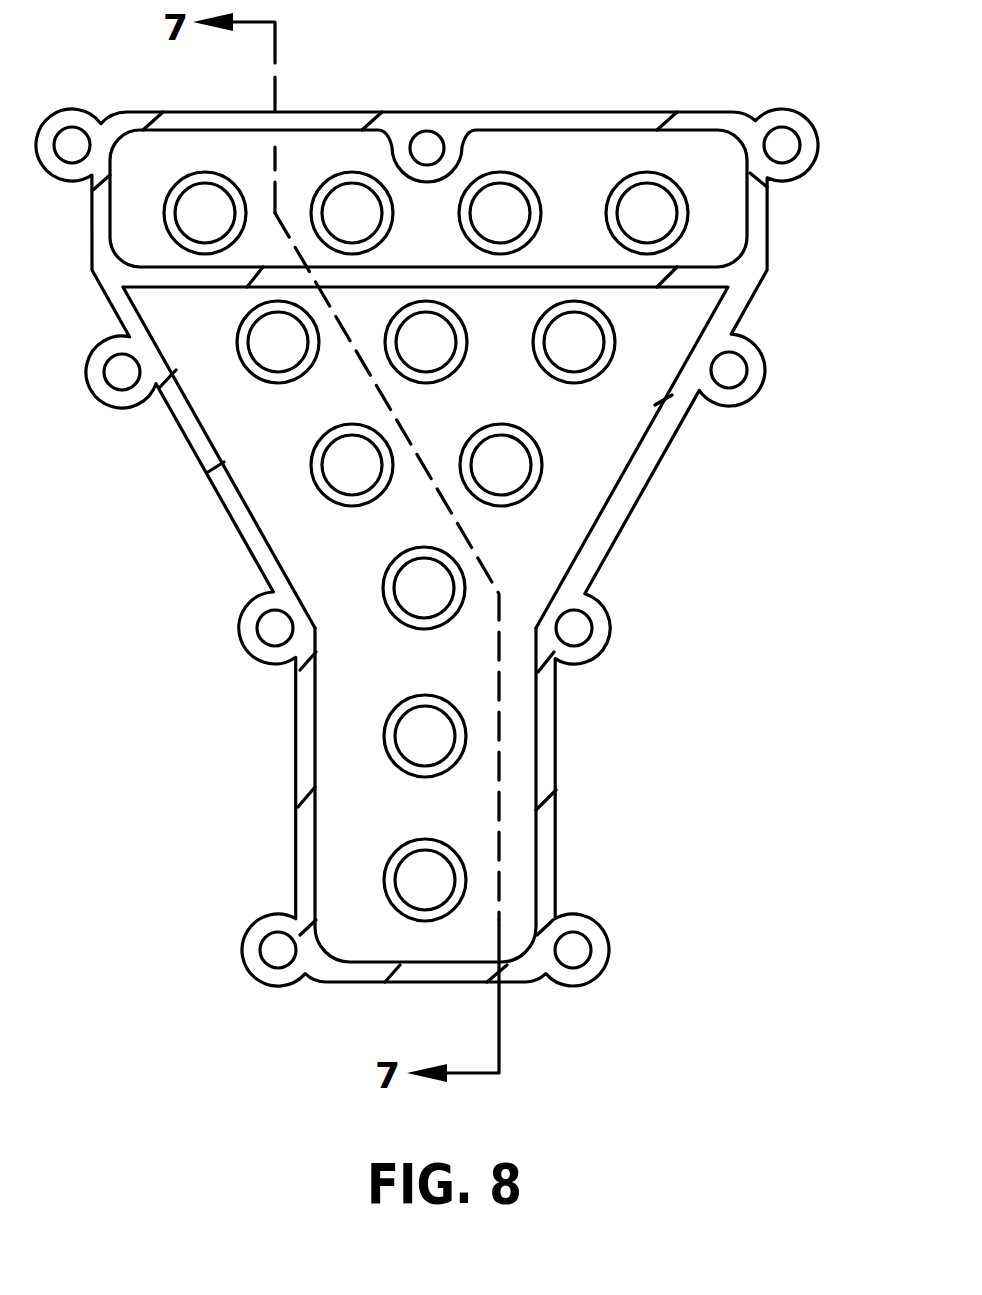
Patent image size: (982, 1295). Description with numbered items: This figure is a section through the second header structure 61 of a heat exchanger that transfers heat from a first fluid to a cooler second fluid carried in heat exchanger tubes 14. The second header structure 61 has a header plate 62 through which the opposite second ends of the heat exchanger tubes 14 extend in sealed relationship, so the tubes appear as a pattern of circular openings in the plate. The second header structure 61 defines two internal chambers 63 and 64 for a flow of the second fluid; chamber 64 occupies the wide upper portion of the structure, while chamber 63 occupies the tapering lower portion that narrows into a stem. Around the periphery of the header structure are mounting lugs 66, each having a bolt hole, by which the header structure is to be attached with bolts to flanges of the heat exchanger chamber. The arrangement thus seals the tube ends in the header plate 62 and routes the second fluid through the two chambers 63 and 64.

The heat exchanger tubes 14 is at (603, 170).
The second header structure 61 is at (622, 521).
The header plate 62 is at (350, 735).
The internal chamber 63 is at (275, 483).
The internal chamber 64 is at (340, 150).
The mounting lugs 66 is at (803, 180).